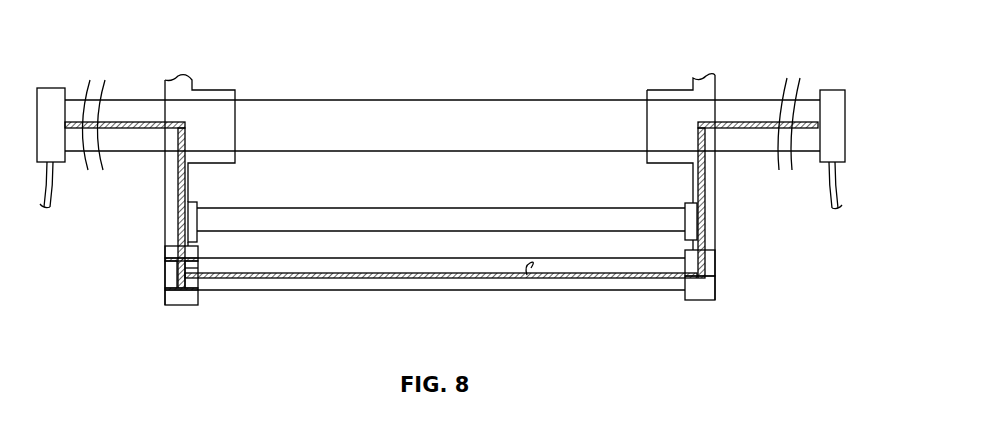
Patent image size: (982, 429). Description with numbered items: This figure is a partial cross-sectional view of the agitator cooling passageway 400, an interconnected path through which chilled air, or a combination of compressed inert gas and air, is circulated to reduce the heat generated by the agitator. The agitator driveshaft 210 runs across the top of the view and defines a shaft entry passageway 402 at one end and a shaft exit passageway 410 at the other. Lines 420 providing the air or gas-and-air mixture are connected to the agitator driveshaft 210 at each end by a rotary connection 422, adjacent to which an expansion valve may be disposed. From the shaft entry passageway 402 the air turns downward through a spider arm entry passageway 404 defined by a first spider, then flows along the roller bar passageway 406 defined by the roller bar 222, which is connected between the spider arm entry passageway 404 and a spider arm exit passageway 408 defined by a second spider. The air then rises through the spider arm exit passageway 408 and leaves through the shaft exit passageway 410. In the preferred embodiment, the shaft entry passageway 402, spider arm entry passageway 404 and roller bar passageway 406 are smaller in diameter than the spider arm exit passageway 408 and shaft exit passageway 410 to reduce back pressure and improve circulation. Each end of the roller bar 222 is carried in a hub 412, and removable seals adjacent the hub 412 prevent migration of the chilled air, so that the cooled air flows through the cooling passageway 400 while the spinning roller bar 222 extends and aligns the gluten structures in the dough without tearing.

The agitator driveshaft 210 is at (466, 112).
The roller bar 222 is at (438, 285).
The cooling passageway 400 is at (527, 275).
The shaft entry passageway 402 is at (158, 121).
The spider arm entry passageway 404 is at (178, 172).
The roller bar passageway 406 is at (303, 278).
The spider arm exit passageway 408 is at (706, 215).
The shaft exit passageway 410 is at (737, 122).
The hub 412 is at (168, 297).
The lines 420 is at (57, 200).
The rotary connection 422 is at (52, 100).